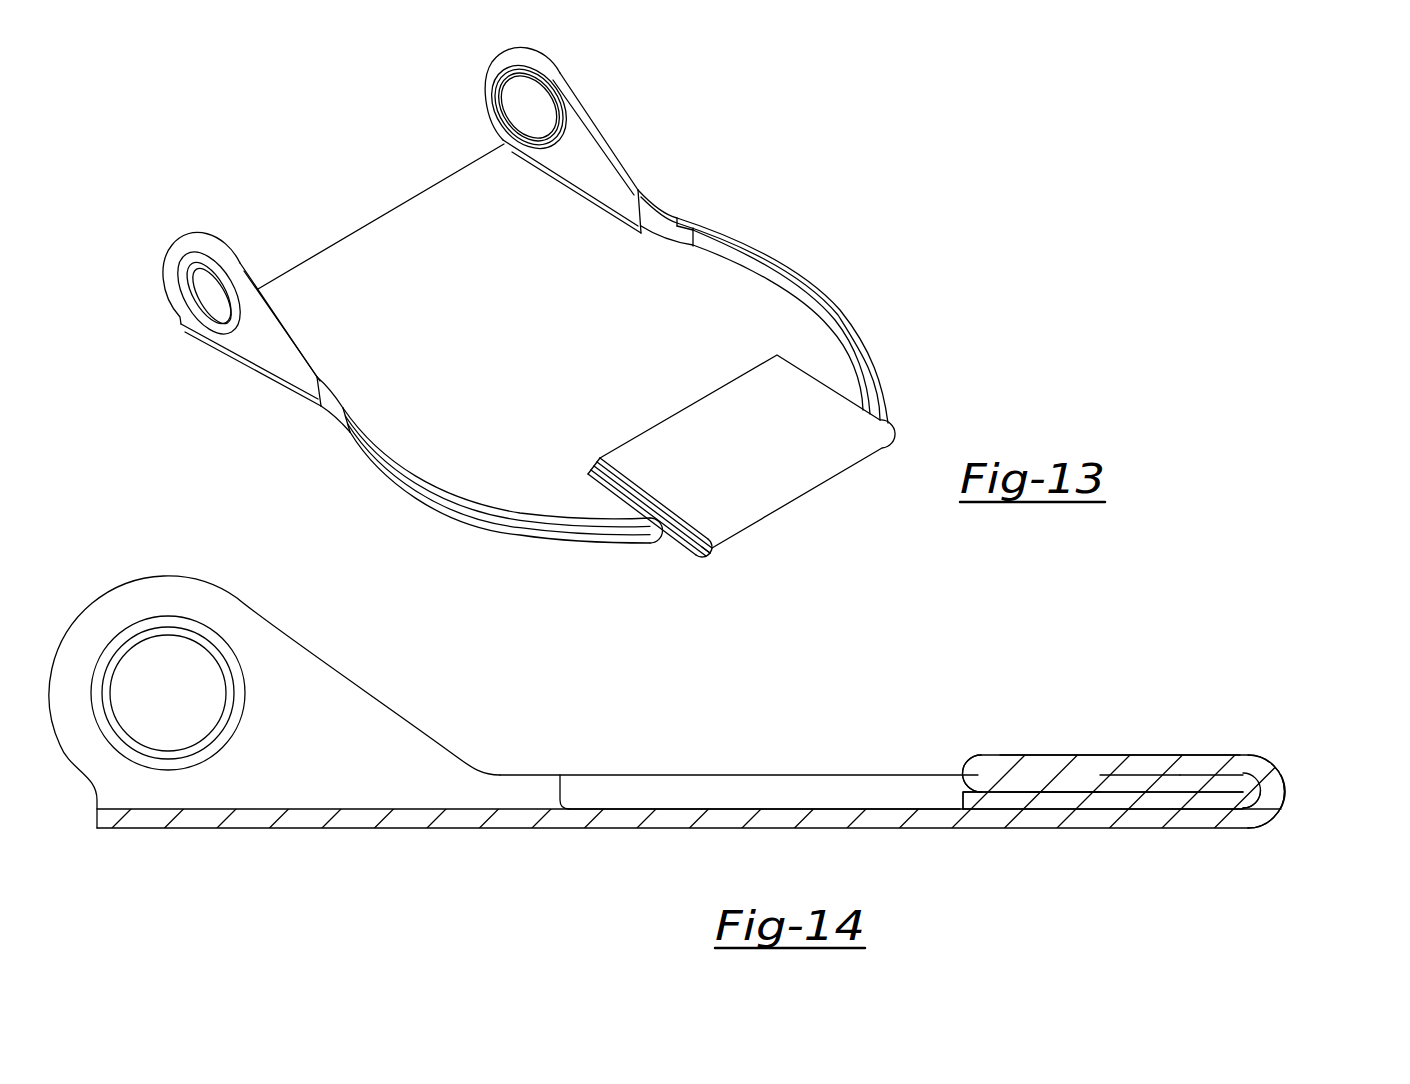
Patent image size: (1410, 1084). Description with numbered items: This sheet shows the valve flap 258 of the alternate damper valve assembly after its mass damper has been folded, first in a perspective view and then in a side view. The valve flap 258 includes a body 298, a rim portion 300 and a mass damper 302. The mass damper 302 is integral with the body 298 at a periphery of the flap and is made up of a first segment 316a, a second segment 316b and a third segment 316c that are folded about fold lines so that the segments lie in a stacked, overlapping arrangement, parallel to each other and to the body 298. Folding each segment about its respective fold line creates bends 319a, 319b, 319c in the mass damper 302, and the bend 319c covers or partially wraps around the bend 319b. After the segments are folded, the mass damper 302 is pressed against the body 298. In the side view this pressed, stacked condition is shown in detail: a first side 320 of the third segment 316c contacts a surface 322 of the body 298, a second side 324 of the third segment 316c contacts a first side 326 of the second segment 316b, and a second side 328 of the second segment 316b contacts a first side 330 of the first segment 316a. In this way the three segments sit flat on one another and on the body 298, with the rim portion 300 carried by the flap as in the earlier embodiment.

In FIG. 13, the valve flap 258 is at (818, 188).
In FIG. 14, the valve flap 258 is at (608, 830).
In FIG. 13, the body 298 is at (690, 292).
In FIG. 14, the body 298 is at (848, 820).
In FIG. 13, the rim portion 300 is at (862, 312).
In FIG. 14, the rim portion 300 is at (838, 790).
In FIG. 13, the mass damper 302 is at (812, 532).
In FIG. 14, the mass damper 302 is at (1162, 718).
In FIG. 13, the first segment 316a is at (628, 480).
In FIG. 14, the first segment 316a is at (1112, 768).
In FIG. 13, the second segment 316b is at (673, 515).
In FIG. 14, the second segment 316b is at (1175, 782).
In FIG. 13, the third segment 316c is at (612, 492).
In FIG. 14, the third segment 316c is at (1175, 800).
In FIG. 13, the bend 319a is at (592, 460).
In FIG. 14, the bend 319a is at (990, 768).
In FIG. 13, the bend 319b is at (696, 556).
In FIG. 14, the bend 319b is at (1240, 806).
In FIG. 13, the bend 319c is at (709, 549).
In FIG. 14, the bend 319c is at (1273, 787).
In FIG. 14, the first side of the segment 316c 320 is at (1036, 811).
In FIG. 14, the surface of the body 322 is at (726, 809).
In FIG. 14, the second side of the segment 316c 324 is at (1058, 790).
In FIG. 14, the first side of the segment 316b 326 is at (1003, 797).
In FIG. 14, the second side of the segment 316b 328 is at (1210, 778).
In FIG. 14, the first side of the segment 316a 330 is at (1128, 778).